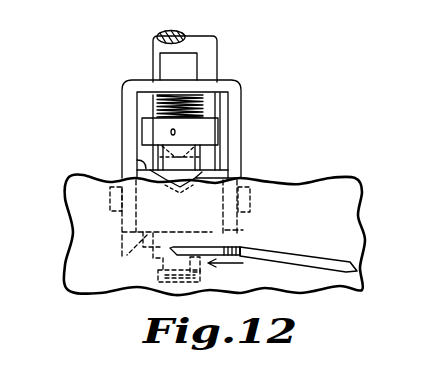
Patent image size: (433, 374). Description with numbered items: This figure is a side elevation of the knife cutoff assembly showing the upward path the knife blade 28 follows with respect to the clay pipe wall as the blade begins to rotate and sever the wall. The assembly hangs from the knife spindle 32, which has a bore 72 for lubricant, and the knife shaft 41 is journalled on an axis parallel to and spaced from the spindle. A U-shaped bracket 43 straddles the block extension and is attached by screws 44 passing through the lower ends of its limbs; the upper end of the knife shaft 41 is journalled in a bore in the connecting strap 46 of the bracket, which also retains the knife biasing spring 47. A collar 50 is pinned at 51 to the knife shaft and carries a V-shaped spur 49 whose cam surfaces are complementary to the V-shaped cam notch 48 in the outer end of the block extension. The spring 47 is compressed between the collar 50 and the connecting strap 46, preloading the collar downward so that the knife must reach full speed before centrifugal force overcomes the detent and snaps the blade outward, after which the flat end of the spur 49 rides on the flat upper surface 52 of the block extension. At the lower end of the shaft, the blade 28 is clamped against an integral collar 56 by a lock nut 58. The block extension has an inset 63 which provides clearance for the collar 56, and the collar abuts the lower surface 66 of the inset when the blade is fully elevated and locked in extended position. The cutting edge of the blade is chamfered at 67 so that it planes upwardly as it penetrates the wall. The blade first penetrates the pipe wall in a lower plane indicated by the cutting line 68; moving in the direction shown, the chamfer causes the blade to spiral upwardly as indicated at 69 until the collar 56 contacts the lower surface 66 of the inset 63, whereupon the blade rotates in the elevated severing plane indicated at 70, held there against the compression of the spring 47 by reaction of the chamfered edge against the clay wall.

The bore 72 is at (183, 33).
The knife spindle 32 is at (224, 43).
The connecting strap 46 is at (163, 78).
The knife shaft 41 is at (190, 67).
The U-shaped bracket 43 is at (122, 110).
The knife biasing spring 47 is at (205, 100).
The pin 51 is at (170, 132).
The collar 50 is at (207, 129).
The flat upper surface 52 is at (137, 160).
The V-shaped spur 49 is at (222, 156).
The V-shaped cam notch 48 is at (234, 178).
The screws 44 is at (252, 197).
The inset 63 is at (122, 248).
The collar 56 is at (138, 255).
The lock nut 58 is at (147, 278).
The lower surface 66 is at (200, 233).
The chamfer 67 is at (172, 250).
The elevated severing plane 70 is at (226, 247).
The blade 28 is at (212, 258).
The upward spiral path 69 is at (273, 263).
The cutting line 68 is at (340, 270).